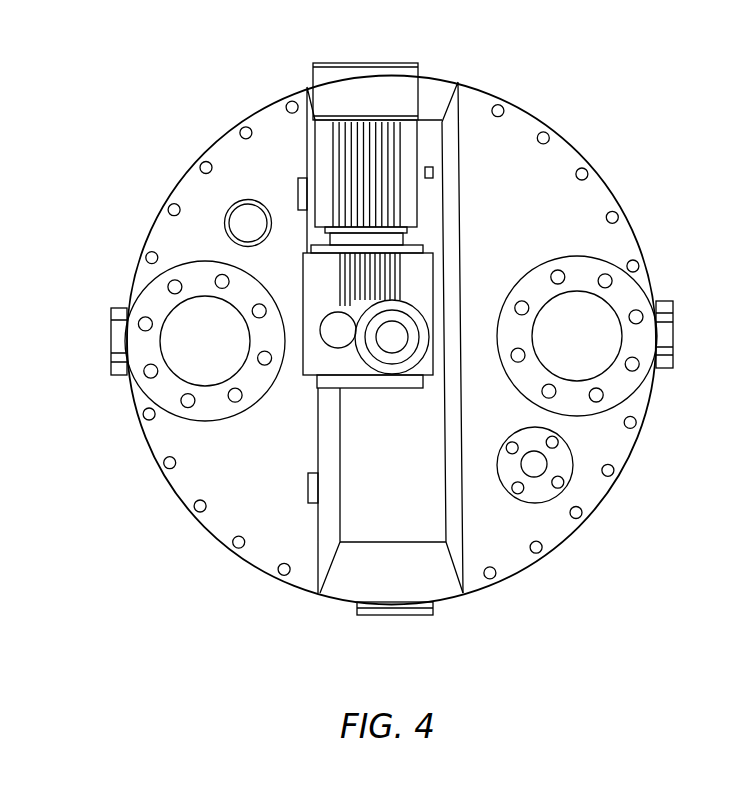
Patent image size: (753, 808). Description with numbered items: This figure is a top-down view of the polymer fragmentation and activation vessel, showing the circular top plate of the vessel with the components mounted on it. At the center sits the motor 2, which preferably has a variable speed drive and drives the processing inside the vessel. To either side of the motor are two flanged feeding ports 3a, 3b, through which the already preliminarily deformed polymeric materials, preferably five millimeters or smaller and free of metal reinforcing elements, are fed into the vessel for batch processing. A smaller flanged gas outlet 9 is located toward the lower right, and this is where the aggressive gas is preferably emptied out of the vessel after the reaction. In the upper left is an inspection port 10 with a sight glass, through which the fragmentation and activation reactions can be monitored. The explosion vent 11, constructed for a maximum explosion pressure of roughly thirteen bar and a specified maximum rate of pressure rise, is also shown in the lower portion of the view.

The motor 2 is at (375, 95).
The feeding port 3a is at (197, 337).
The feeding port 3b is at (579, 318).
The gas outlet 9 is at (546, 487).
The inspection port 10 is at (243, 200).
The explosion vent 11 is at (388, 482).